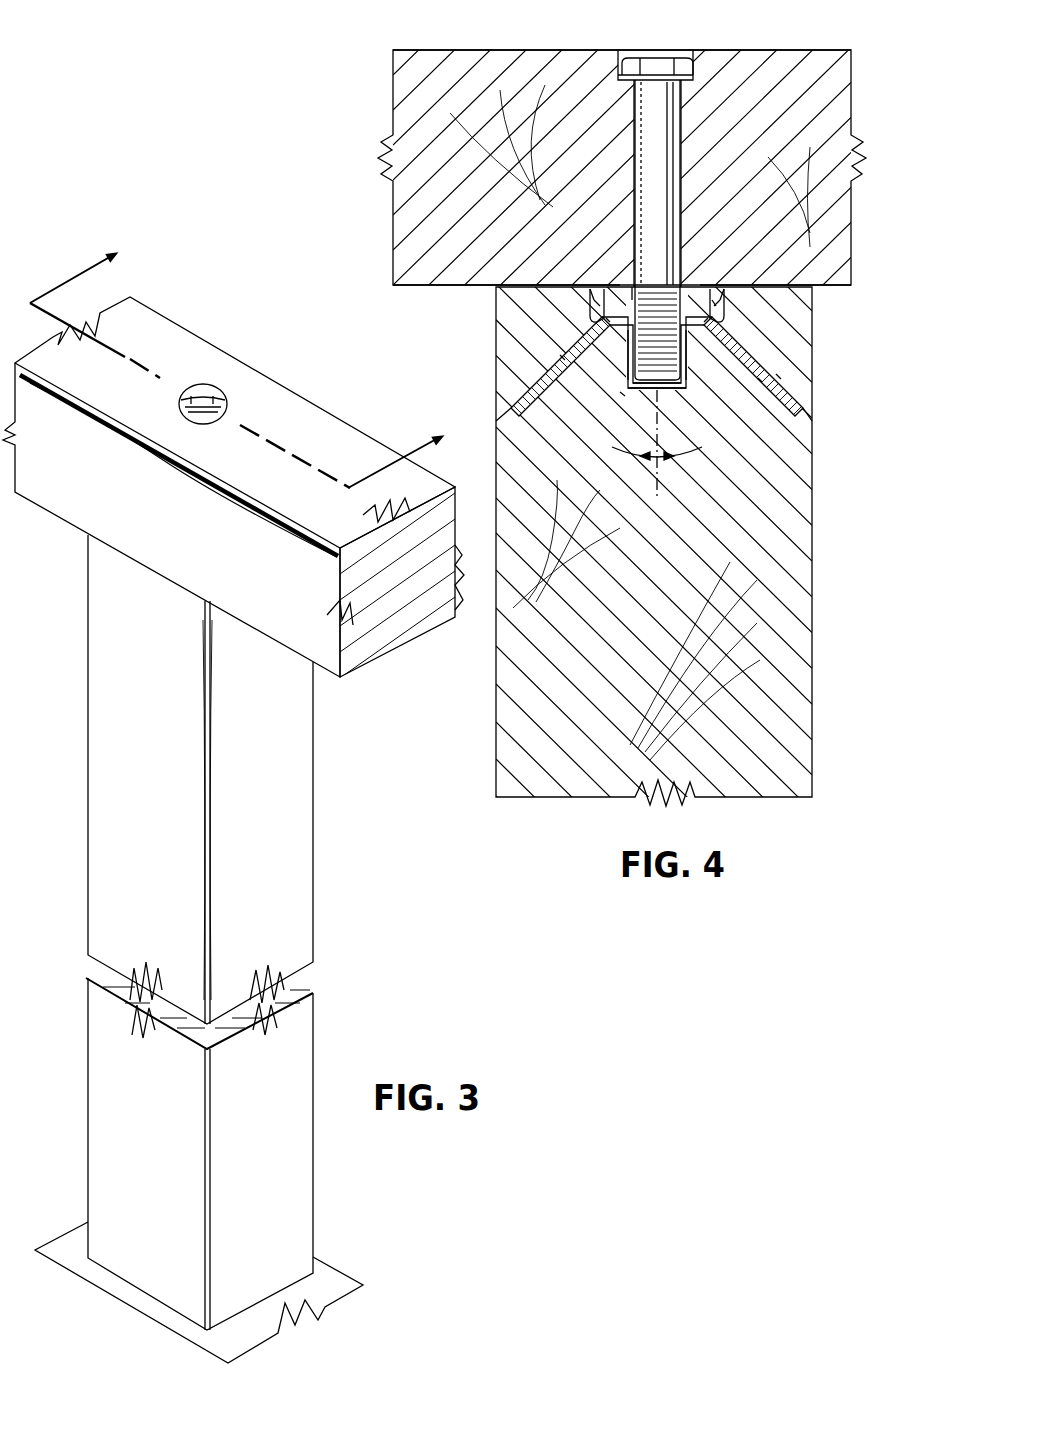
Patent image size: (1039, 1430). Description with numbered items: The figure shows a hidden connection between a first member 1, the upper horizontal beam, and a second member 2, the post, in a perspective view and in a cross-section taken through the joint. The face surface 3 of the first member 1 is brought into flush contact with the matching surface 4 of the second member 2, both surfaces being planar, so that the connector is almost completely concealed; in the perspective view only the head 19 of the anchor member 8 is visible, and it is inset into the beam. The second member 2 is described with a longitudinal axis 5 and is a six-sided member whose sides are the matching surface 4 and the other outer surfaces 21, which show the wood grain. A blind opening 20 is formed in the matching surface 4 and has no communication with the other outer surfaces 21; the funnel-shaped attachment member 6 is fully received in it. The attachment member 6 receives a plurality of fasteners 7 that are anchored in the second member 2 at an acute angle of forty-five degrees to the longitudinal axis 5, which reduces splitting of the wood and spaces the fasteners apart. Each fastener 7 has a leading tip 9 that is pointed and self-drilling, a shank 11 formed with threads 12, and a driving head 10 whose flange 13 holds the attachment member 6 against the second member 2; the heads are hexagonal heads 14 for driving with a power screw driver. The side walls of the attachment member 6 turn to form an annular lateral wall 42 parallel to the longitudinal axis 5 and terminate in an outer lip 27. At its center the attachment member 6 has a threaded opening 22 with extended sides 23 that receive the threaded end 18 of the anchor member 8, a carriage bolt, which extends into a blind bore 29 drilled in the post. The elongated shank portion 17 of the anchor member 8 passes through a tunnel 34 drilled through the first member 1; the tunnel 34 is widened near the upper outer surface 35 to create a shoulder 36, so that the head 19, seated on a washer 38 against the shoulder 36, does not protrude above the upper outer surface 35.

In FIG. 4, the first member 1 is at (432, 44).
In FIG. 3, the first member 1 is at (328, 395).
In FIG. 4, the second member 2 is at (814, 503).
In FIG. 3, the second member 2 is at (318, 746).
In FIG. 4, the face surface 3 is at (447, 288).
In FIG. 4, the matching surface 4 is at (816, 288).
In FIG. 3, the matching surface 4 is at (245, 352).
In FIG. 4, the longitudinal axis 5 is at (672, 478).
In FIG. 4, the attachment member 6 is at (612, 338).
In FIG. 4, the fasteners 7 is at (523, 388).
In FIG. 4, the anchor member 8 is at (684, 124).
In FIG. 4, the leading tips 9 is at (505, 420).
In FIG. 4, the driving heads 10 is at (594, 312).
In FIG. 4, the shank 11 is at (560, 352).
In FIG. 4, the threads 12 is at (620, 392).
In FIG. 4, the flange 13 is at (610, 295).
In FIG. 4, the hexagonal heads 14 is at (593, 300).
In FIG. 4, the elongated shank portion 17 is at (662, 212).
In FIG. 4, the threaded end 18 is at (640, 378).
In FIG. 4, the head 19 is at (655, 58).
In FIG. 3, the head 19 is at (205, 400).
In FIG. 4, the blind opening 20 is at (632, 296).
In FIG. 4, the other outer surfaces 21 is at (496, 640).
In FIG. 3, the other outer surfaces 21 is at (108, 748).
In FIG. 4, the threaded opening 22 is at (684, 345).
In FIG. 4, the extended sides 23 is at (630, 345).
In FIG. 4, the outer lip 27 is at (714, 298).
In FIG. 4, the blind bore 29 is at (668, 388).
In FIG. 4, the tunnel 34 is at (670, 167).
In FIG. 3, the tunnel 34 is at (218, 392).
In FIG. 4, the upper outer surface 35 is at (547, 52).
In FIG. 4, the shoulder 36 is at (620, 72).
In FIG. 4, the washer 38 is at (694, 78).
In FIG. 4, the lateral wall 42 is at (592, 300).